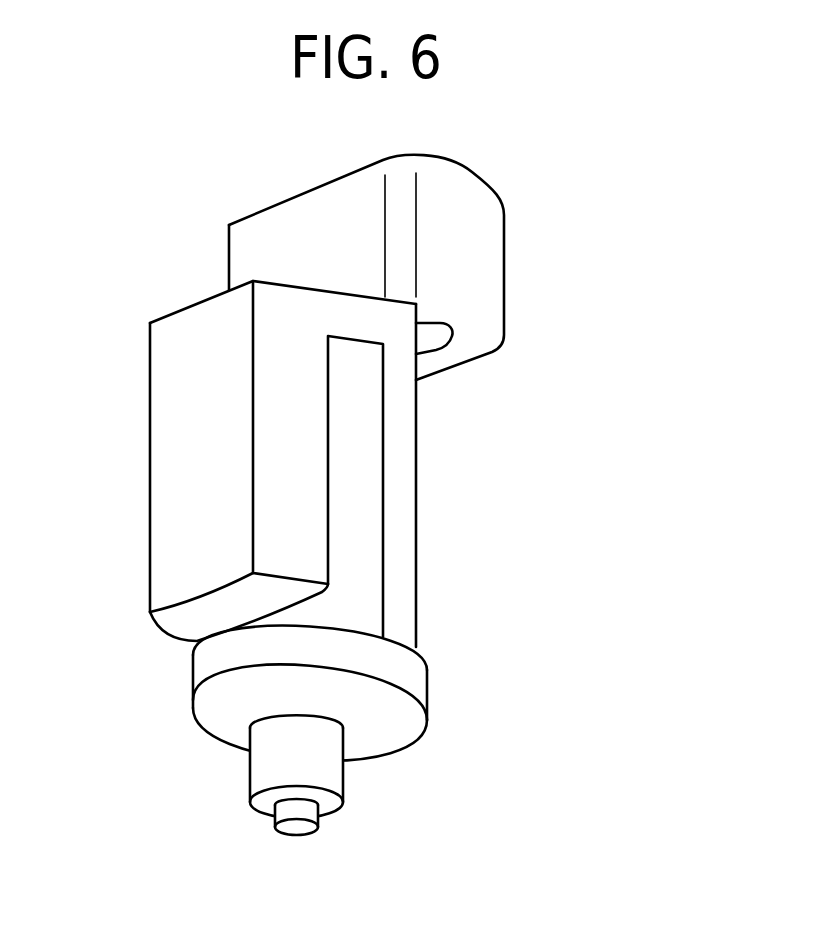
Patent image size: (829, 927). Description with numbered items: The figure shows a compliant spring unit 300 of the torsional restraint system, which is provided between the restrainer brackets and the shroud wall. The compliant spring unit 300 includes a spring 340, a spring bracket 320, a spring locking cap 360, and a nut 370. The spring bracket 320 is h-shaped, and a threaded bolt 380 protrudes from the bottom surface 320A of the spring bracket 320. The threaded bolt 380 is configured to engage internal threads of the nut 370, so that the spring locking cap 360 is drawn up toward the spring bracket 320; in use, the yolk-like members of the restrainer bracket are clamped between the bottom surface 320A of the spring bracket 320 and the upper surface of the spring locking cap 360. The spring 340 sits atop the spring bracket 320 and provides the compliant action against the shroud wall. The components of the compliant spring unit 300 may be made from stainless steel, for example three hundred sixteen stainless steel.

The compliant spring unit 300 is at (433, 547).
The spring bracket 320 is at (401, 466).
The bottom surface 320A is at (357, 345).
The spring 340 is at (505, 272).
The spring locking cap 360 is at (425, 688).
The nut 370 is at (345, 778).
The threaded bolt 380 is at (297, 835).